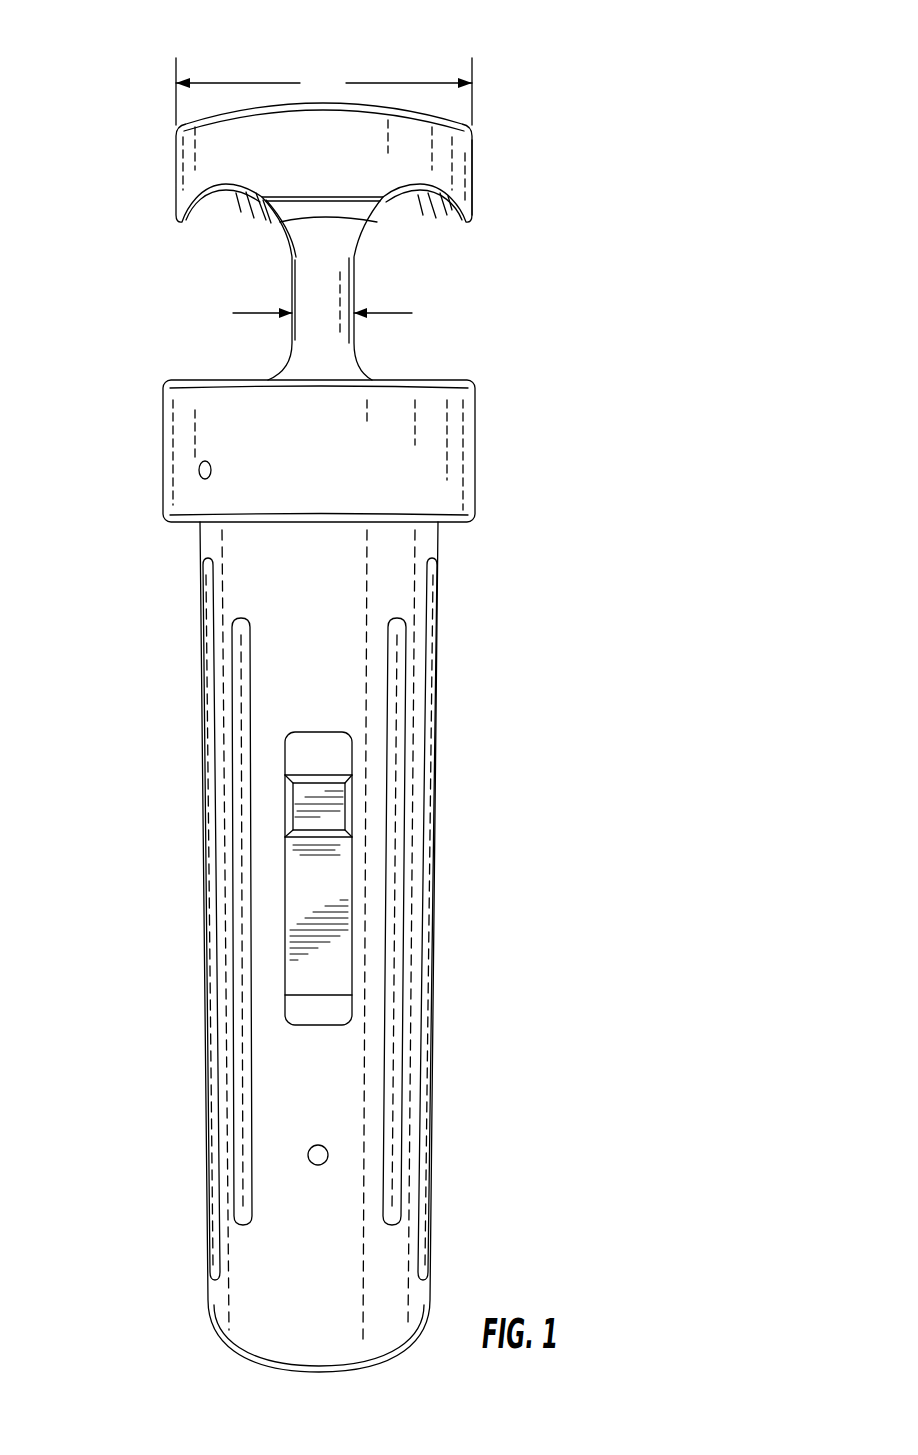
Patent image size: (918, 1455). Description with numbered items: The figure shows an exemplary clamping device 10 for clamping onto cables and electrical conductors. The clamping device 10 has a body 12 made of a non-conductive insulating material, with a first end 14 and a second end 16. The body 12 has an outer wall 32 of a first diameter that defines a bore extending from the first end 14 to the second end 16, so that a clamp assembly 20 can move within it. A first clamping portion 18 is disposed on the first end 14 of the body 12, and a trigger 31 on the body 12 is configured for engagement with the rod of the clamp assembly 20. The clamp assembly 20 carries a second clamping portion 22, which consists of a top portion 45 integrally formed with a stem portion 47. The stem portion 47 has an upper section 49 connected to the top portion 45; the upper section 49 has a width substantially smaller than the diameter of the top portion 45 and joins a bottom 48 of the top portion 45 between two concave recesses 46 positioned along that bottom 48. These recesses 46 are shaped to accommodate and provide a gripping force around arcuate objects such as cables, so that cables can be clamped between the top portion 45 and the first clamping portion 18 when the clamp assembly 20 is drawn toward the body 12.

The clamping device 10 is at (614, 66).
The body 12 is at (301, 1100).
The first end 14 is at (507, 419).
The second end 16 is at (449, 1268).
The first clamping portion 18 is at (311, 463).
The clamp assembly 20 is at (108, 122).
The second clamping portion 22 is at (311, 171).
The trigger 31 is at (335, 820).
The outer wall 32 is at (430, 1073).
The top portion 45 is at (457, 182).
The concave recesses 46 is at (218, 219).
The stem portion 47 is at (356, 353).
The bottom 48 is at (254, 242).
The upper section 49 is at (302, 347).